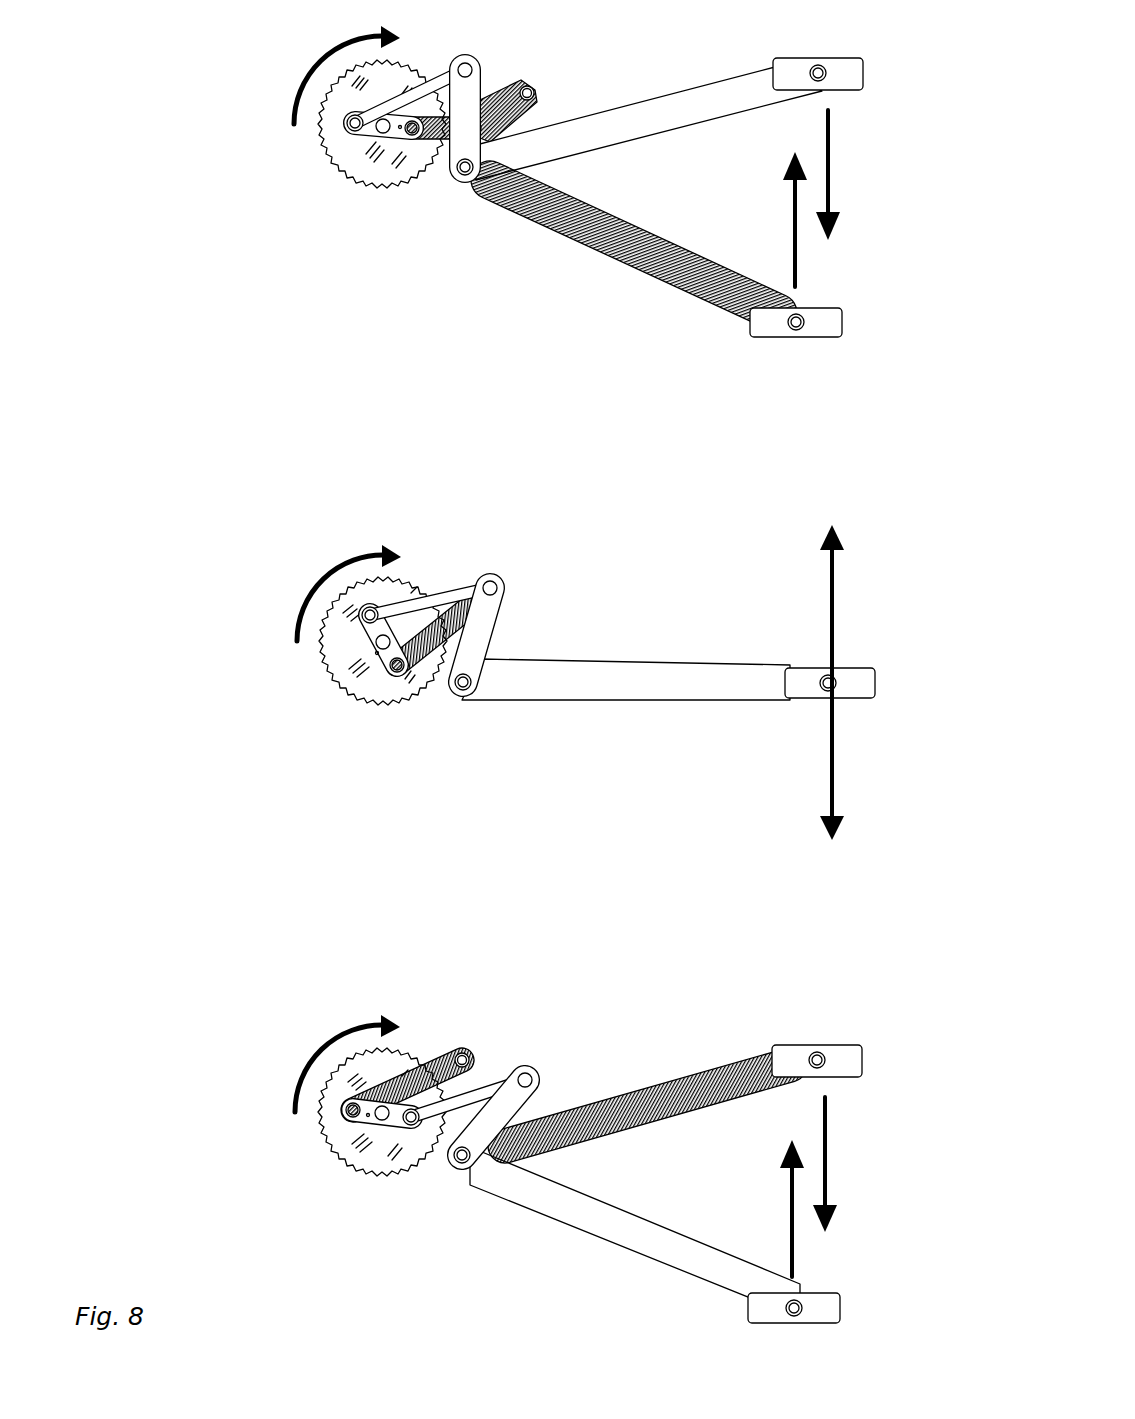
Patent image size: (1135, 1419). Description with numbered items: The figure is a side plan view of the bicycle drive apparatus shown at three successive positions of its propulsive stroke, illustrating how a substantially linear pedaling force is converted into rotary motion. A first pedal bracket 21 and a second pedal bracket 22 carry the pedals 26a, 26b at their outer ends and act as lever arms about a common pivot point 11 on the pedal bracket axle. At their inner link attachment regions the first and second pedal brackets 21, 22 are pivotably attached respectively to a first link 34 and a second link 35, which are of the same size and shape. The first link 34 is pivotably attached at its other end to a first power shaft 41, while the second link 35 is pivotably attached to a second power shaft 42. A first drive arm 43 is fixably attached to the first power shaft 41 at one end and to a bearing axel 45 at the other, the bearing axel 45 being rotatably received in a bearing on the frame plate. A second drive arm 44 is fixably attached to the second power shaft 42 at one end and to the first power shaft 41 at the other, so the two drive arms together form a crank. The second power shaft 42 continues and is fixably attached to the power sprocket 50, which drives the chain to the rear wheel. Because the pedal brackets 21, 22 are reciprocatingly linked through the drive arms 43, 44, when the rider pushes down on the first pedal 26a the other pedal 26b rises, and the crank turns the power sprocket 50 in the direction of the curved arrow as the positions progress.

The common pivot point 11 is at (460, 180).
The first pedal bracket 21 is at (690, 97).
The second pedal bracket 22 is at (682, 255).
The pedal 26a is at (858, 60).
The pedal 26b is at (835, 312).
The first link 34 is at (426, 80).
The second link 35 is at (490, 95).
The first power shaft 41 is at (347, 123).
The second power shaft 42 is at (415, 135).
The first drive arm 43 is at (370, 130).
The second drive arm 44 is at (400, 133).
The bearing axel 45 is at (383, 133).
The power sprocket 50 is at (333, 147).